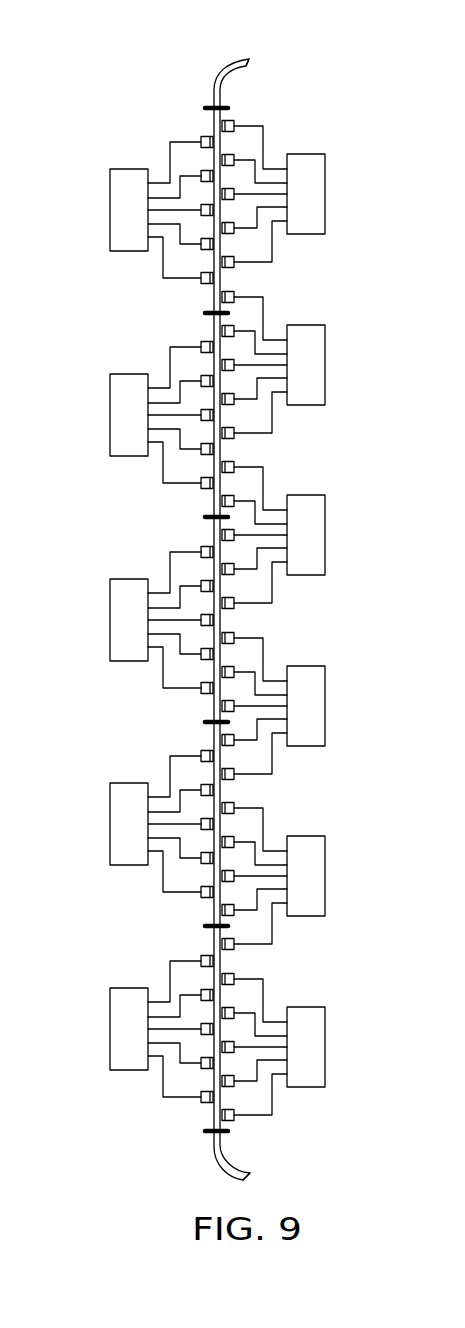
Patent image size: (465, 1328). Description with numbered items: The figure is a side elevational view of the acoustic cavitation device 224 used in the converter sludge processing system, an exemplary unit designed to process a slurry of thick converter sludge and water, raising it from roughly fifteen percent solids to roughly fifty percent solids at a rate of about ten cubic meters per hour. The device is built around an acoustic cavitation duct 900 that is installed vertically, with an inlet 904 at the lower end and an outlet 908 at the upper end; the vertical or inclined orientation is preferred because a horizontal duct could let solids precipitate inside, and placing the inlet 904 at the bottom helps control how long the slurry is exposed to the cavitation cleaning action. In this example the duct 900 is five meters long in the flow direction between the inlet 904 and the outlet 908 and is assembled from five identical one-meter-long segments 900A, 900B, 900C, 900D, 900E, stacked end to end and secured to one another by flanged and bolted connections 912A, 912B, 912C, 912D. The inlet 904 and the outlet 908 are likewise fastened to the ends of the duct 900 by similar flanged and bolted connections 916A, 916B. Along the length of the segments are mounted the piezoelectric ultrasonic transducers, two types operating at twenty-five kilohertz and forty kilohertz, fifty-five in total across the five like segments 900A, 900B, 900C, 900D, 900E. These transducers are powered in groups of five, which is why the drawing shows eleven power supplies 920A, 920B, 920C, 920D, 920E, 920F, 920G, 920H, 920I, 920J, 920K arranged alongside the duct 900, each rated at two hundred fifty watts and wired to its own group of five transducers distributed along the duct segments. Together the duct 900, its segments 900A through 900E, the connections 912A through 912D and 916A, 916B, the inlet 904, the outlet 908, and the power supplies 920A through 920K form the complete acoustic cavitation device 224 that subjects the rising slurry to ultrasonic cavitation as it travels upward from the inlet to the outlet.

The acoustic cavitation device 224 is at (54, 851).
The acoustic cavitation duct 900 is at (202, 708).
The segment 900A is at (231, 995).
The segment 900B is at (231, 824).
The segment 900C is at (231, 585).
The segment 900D is at (231, 449).
The segment 900E is at (231, 210).
The inlet 904 is at (240, 1168).
The outlet 908 is at (249, 59).
The flanged and bolted connection 912A is at (228, 923).
The flanged and bolted connection 912B is at (229, 719).
The flanged and bolted connection 912C is at (228, 514).
The flanged and bolted connection 912D is at (228, 312).
The flanged and bolted connection 916A is at (228, 1127).
The flanged and bolted connection 916B is at (228, 106).
The power supply 920A is at (325, 1023).
The power supply 920B is at (110, 997).
The power supply 920C is at (325, 852).
The power supply 920D is at (110, 792).
The power supply 920E is at (325, 682).
The power supply 920F is at (110, 588).
The power supply 920G is at (325, 511).
The power supply 920H is at (110, 387).
The power supply 920I is at (325, 341).
The power supply 920J is at (110, 182).
The power supply 920K is at (325, 170).